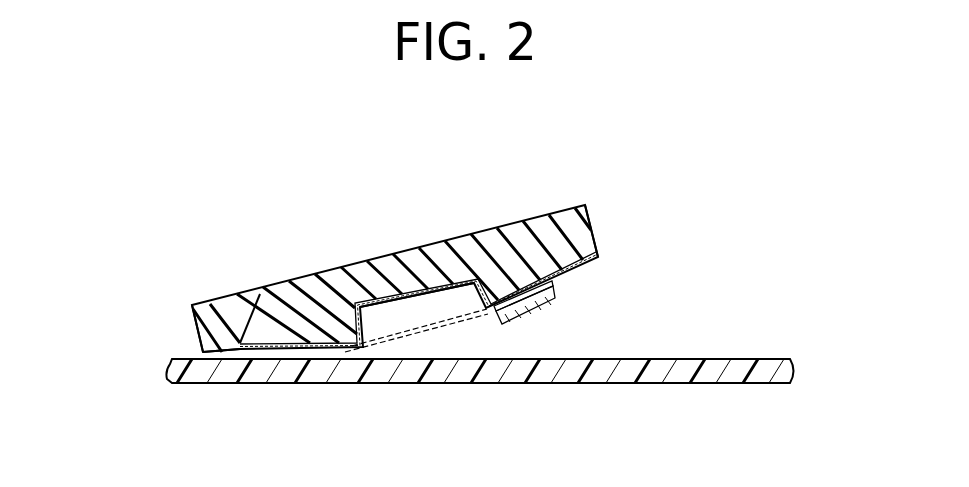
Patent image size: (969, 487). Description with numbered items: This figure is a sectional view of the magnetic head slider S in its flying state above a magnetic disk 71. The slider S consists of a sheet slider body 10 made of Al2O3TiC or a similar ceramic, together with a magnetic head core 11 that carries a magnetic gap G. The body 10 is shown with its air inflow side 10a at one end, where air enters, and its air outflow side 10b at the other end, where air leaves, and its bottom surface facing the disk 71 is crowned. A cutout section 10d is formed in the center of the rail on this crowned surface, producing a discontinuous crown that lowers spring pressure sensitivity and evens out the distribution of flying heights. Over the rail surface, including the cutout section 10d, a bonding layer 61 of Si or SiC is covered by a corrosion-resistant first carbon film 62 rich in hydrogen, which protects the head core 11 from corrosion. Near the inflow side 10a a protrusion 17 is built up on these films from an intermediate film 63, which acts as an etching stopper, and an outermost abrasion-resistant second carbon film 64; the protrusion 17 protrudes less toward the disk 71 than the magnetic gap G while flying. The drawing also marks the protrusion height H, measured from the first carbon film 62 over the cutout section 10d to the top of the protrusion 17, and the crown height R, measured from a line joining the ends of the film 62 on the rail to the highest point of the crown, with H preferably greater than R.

The slider body 10 is at (257, 288).
The air inflow side 10a is at (600, 218).
The air outflow side 10b is at (183, 312).
The cutout section 10d is at (427, 295).
The magnetic head core 11 is at (207, 337).
The protrusion 17 is at (599, 310).
The bonding layer 61 is at (598, 252).
The first carbon film 62 is at (598, 263).
The intermediate film 63 is at (553, 288).
The second carbon film 64 is at (554, 300).
The magnetic disk 71 is at (764, 372).
The magnetic head slider S is at (338, 240).
The magnetic gap G is at (218, 313).
The height of the protrusion H is at (487, 253).
The crown height R is at (430, 350).